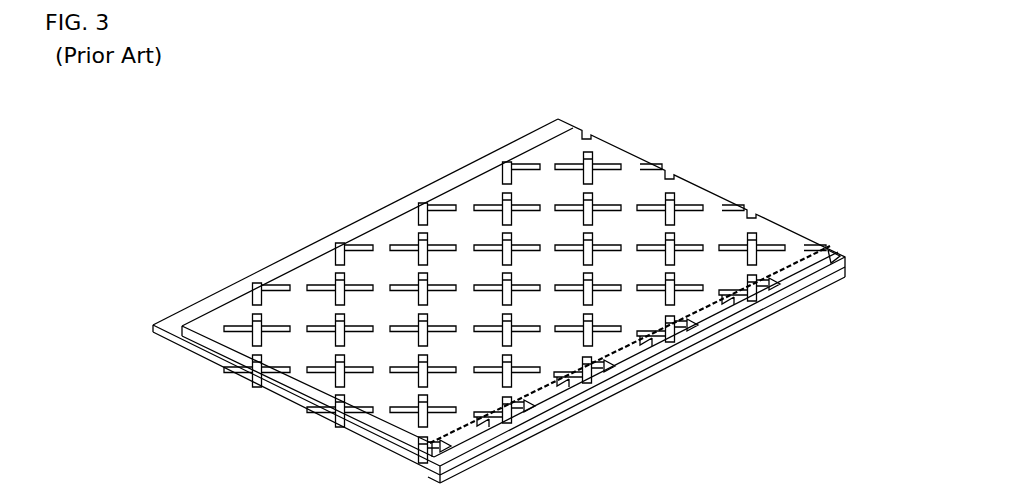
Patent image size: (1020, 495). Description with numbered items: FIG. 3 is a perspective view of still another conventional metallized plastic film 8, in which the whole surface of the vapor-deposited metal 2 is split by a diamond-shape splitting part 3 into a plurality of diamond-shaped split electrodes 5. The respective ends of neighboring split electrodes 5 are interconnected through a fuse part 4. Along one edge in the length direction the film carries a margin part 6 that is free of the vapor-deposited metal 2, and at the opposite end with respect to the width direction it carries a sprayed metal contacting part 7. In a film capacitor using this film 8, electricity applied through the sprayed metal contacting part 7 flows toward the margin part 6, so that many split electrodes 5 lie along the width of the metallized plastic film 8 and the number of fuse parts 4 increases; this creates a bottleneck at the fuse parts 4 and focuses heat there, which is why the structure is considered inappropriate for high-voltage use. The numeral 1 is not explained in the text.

The substrate 1 is at (703, 343).
The vapor-deposited metal 2 is at (458, 223).
The splitting part 3 is at (507, 376).
The fuse part 4 is at (352, 404).
The split electrode 5 is at (352, 244).
The margin part 6 is at (370, 222).
The sprayed metal contacting part 7 is at (648, 397).
The metallized plastic film 8 is at (850, 233).